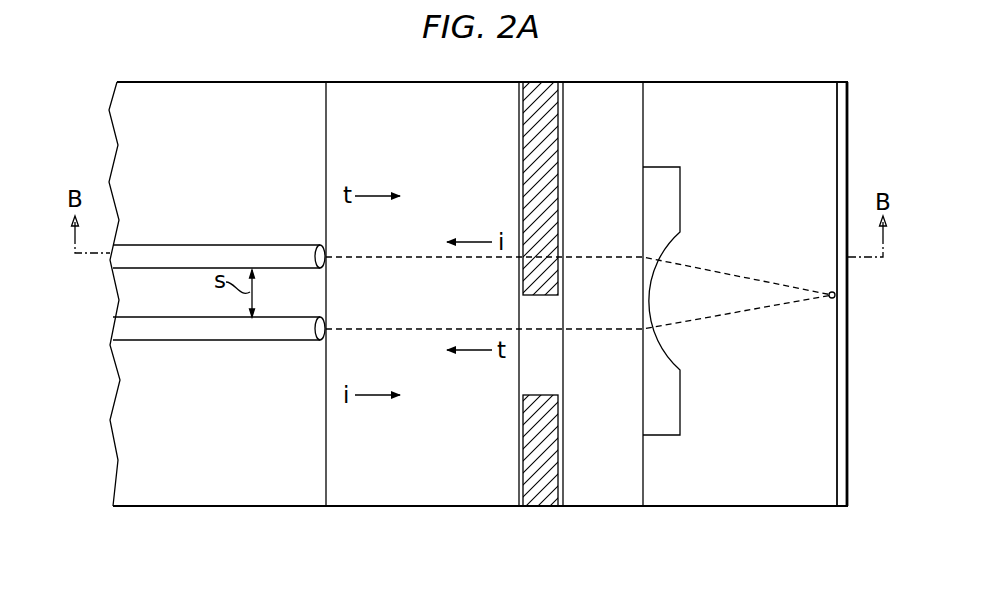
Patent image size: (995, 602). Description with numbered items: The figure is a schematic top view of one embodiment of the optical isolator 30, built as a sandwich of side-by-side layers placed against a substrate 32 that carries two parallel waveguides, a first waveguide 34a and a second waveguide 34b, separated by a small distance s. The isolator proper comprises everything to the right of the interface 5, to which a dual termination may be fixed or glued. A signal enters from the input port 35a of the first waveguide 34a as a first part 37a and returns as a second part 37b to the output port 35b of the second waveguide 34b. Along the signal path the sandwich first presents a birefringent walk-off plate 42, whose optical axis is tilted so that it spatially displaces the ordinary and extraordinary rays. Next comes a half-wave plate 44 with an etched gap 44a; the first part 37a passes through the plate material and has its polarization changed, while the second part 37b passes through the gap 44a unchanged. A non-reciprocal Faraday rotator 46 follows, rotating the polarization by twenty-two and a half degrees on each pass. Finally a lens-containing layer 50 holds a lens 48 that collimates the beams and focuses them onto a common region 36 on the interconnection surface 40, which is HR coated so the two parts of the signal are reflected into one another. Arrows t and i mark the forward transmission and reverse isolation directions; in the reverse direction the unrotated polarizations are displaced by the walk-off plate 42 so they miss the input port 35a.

The optical isolator 30 is at (741, 58).
The substrate 32 is at (141, 90).
The first waveguide 34a is at (148, 262).
The second waveguide 34b is at (148, 332).
The input port 35a is at (322, 262).
The output port 35b is at (322, 335).
The common region of reflection 36 is at (829, 291).
The first part of the signal 37a is at (410, 257).
The second part of the signal 37b is at (412, 331).
The interconnection surface 40 is at (840, 143).
The birefringent plate 42 is at (462, 495).
The half-wave plate 44 is at (541, 495).
The gap 44a is at (560, 372).
The non-reciprocal rotator 46 is at (606, 495).
The lens 48 is at (672, 197).
The lens-containing layer 50 is at (740, 497).
The interface 5 is at (326, 481).